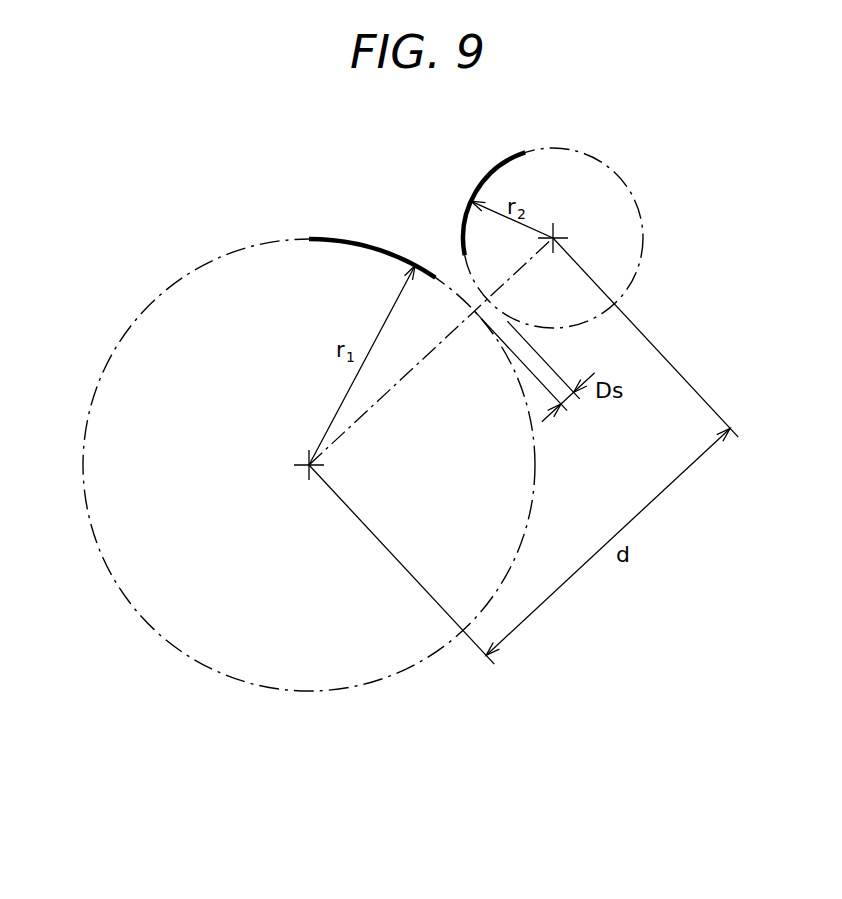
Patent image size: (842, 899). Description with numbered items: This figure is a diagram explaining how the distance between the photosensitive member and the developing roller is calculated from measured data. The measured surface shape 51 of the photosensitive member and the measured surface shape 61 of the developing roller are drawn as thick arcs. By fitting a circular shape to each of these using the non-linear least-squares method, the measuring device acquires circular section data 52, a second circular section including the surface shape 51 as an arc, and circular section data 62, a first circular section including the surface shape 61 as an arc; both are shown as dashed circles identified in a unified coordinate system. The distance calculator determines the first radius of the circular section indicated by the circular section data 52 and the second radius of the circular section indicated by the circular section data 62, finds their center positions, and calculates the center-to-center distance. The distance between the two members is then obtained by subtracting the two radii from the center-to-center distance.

The surface shape 51 is at (338, 238).
The circular section data 52 is at (280, 682).
The surface shape 61 is at (487, 172).
The circular section data 62 is at (625, 291).